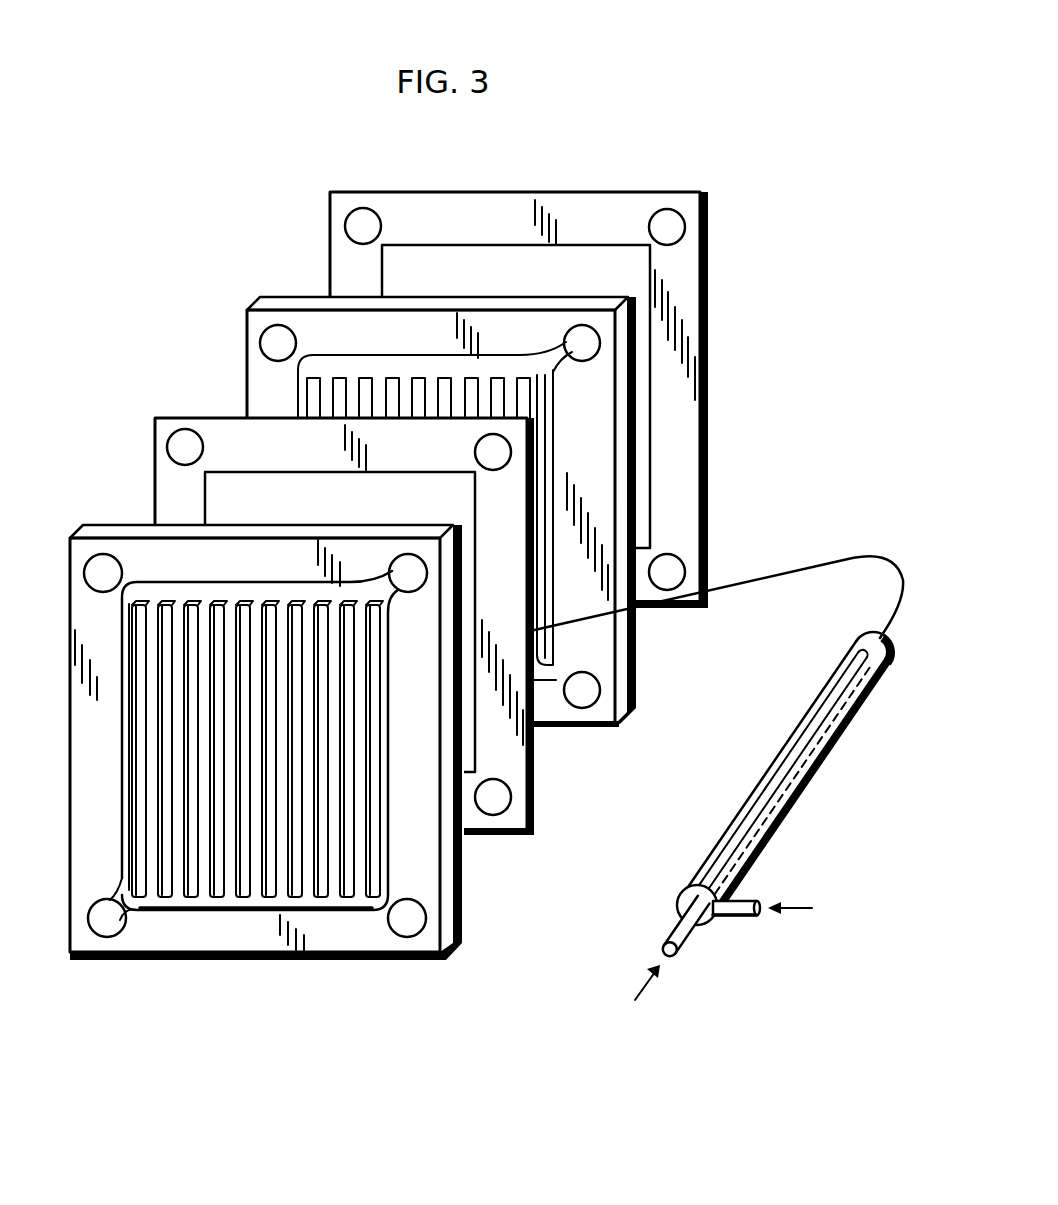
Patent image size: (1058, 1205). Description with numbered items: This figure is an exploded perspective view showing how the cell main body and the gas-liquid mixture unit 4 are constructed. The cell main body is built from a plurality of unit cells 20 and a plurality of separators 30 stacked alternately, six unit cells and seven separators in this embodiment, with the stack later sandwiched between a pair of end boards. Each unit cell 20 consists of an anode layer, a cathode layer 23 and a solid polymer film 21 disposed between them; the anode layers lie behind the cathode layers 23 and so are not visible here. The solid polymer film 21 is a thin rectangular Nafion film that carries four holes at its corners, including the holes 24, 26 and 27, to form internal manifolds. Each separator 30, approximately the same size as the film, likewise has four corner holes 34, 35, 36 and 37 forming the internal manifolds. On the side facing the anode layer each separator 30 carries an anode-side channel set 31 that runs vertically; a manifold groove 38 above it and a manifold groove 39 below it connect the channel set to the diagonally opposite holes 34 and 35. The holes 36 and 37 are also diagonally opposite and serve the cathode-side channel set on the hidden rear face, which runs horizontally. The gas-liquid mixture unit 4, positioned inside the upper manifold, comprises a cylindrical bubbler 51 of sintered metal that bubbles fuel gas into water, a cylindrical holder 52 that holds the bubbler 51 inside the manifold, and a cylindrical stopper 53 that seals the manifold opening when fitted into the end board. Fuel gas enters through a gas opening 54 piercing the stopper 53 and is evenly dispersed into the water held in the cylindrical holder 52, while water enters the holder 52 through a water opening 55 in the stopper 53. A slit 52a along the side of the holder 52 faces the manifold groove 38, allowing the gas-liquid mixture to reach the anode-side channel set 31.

The gas-liquid mixture unit 4 is at (720, 796).
The unit cell 20 is at (705, 276).
The solid polymer film 21 is at (705, 370).
The cathode layer 23 is at (640, 436).
The hole 24 is at (668, 228).
The hole 26 is at (358, 224).
The hole 27 is at (672, 567).
The separator 30 is at (640, 662).
The anode-side channel set 31 is at (222, 870).
The hole 34 is at (581, 350).
The hole 35 is at (105, 925).
The hole 36 is at (278, 345).
The hole 37 is at (590, 695).
The manifold groove 38 is at (233, 593).
The manifold groove 39 is at (255, 903).
The cylindrical bubbler 51 is at (818, 714).
The cylindrical holder 52 is at (862, 723).
The slit 52a is at (850, 668).
The cylindrical stopper 53 is at (695, 892).
The gas opening 54 is at (665, 937).
The water opening 55 is at (742, 922).